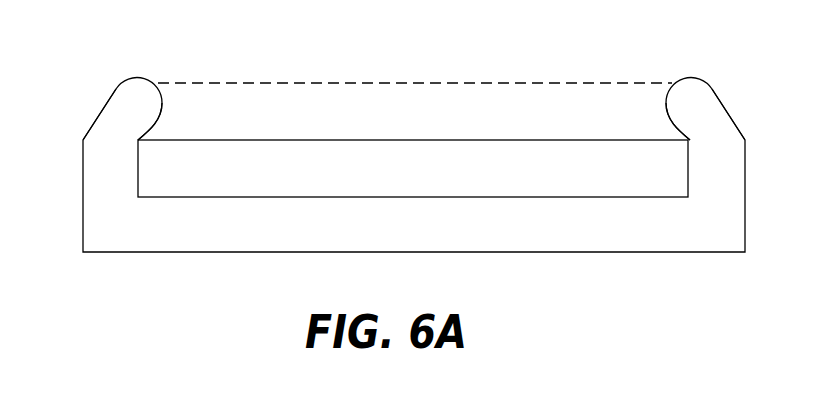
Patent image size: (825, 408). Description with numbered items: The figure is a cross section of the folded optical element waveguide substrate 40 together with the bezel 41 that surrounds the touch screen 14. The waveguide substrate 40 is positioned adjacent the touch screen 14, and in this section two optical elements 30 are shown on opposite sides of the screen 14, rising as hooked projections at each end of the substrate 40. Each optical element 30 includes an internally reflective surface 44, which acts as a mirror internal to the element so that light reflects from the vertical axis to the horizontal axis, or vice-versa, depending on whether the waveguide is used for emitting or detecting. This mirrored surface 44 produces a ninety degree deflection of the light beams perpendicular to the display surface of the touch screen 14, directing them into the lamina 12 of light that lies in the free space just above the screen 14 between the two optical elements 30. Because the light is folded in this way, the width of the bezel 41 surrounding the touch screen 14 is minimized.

The lamina of light 12 is at (412, 108).
The touch screen 14 is at (409, 171).
The optical element 30 is at (163, 107).
The folded optical element waveguide substrate 40 is at (538, 237).
The bezel 41 is at (188, 65).
The internally reflective surface 44 is at (103, 111).